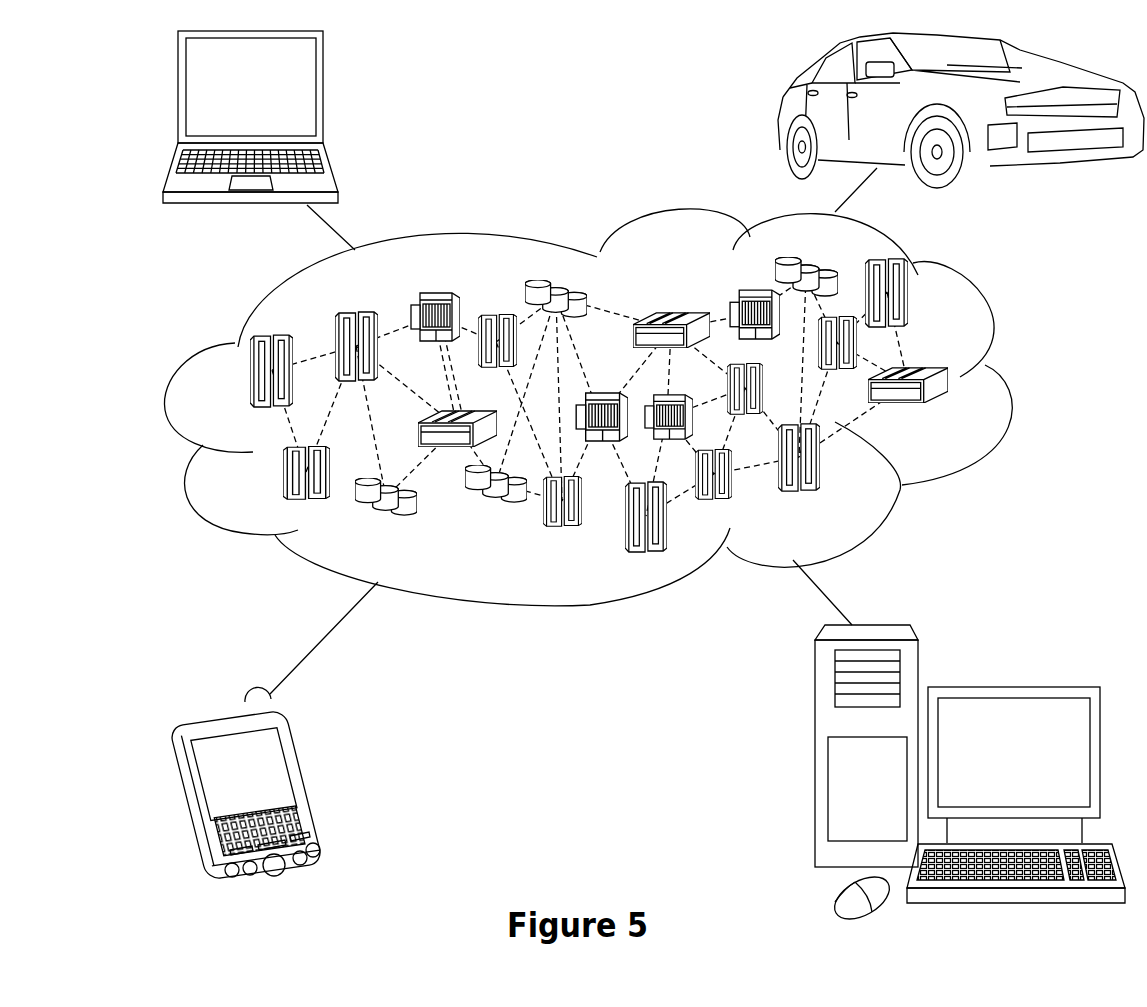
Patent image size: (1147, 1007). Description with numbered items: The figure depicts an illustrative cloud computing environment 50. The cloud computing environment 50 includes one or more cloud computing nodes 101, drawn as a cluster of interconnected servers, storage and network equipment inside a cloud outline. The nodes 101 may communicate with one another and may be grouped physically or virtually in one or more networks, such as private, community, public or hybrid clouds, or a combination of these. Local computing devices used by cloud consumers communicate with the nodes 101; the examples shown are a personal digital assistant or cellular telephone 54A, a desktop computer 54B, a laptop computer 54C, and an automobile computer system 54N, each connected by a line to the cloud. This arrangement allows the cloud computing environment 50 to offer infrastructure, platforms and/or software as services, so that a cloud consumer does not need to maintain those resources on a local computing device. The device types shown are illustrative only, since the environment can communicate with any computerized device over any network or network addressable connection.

The cloud computing environment 50 is at (1012, 382).
The cloud computing nodes 101 is at (960, 417).
The personal digital assistant or cellular telephone 54A is at (312, 785).
The desktop computer 54B is at (1010, 685).
The laptop computer 54C is at (322, 95).
The automobile computer system 54N is at (783, 110).